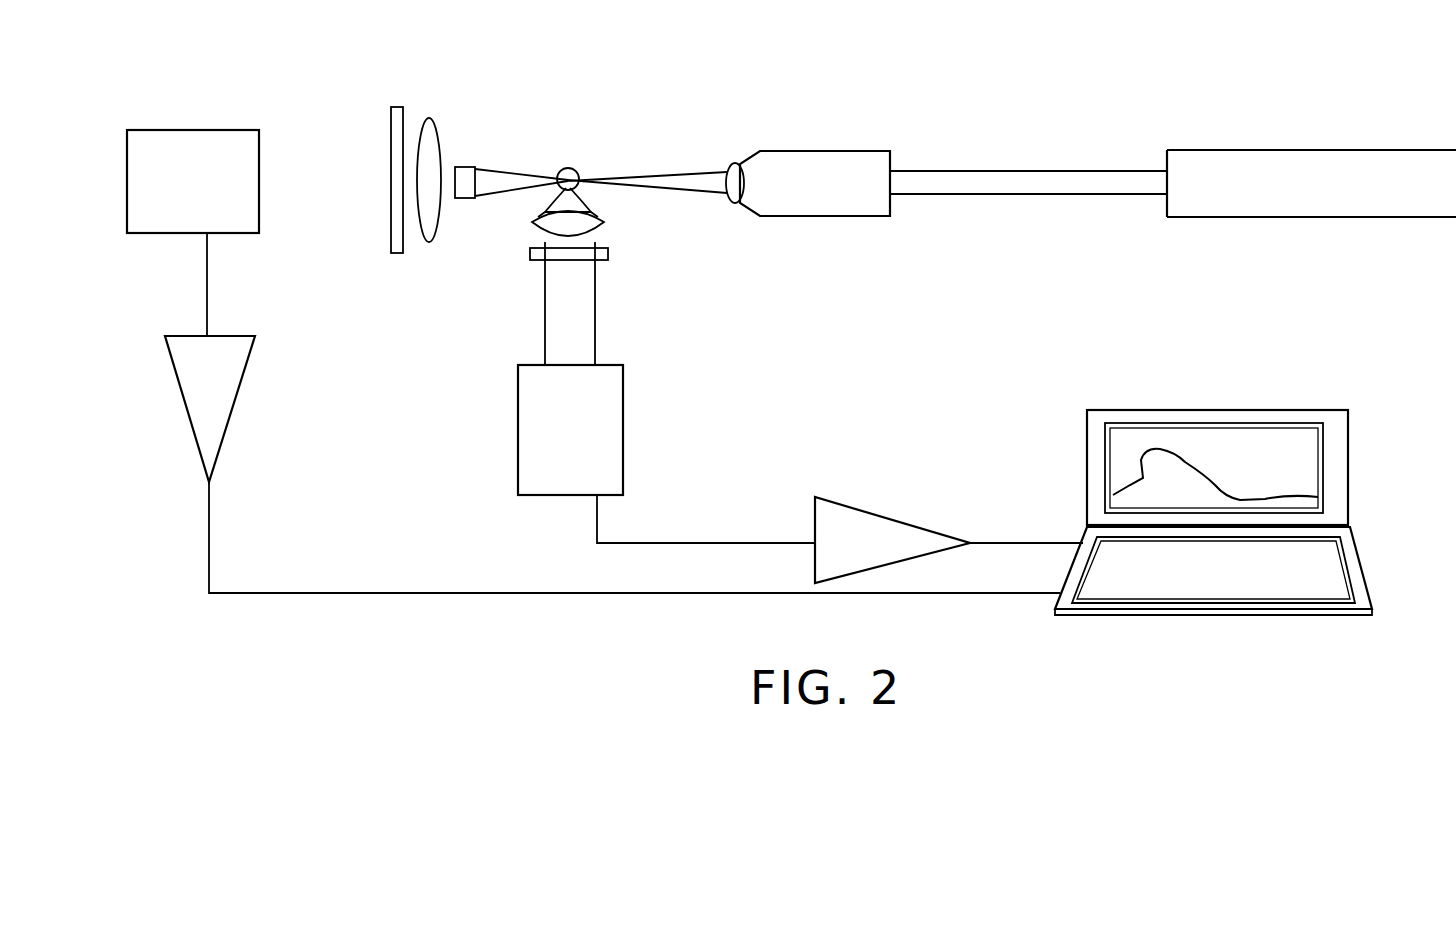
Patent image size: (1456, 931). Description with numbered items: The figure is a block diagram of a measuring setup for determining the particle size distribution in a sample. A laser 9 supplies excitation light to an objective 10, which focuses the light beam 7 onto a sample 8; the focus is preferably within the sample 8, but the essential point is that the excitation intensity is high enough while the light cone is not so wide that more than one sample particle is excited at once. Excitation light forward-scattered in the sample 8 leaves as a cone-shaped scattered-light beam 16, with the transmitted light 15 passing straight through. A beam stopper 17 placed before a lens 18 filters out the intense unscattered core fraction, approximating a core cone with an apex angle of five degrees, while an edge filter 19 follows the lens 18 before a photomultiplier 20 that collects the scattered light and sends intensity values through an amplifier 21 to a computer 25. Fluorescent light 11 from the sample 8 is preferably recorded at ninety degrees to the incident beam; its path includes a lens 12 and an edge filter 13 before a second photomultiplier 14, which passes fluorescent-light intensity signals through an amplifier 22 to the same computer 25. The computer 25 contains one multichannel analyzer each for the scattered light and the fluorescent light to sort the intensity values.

The excitation light beam 7 is at (694, 178).
The sample 8 is at (567, 170).
The laser 9 is at (1304, 158).
The objective 10 is at (838, 168).
The fluorescent light 11 is at (593, 217).
The lens 12 is at (543, 230).
The edge filter 13 is at (610, 257).
The photomultiplier 14 is at (607, 411).
The transmitted light 15 is at (480, 146).
The cone-shaped scattered-light beam 16 is at (503, 180).
The beam stopper 17 is at (460, 165).
The lens 18 is at (425, 240).
The edge filter 19 is at (393, 120).
The photomultiplier 20 is at (170, 143).
The amplifier 21 is at (217, 398).
The amplifier 22 is at (878, 528).
The computer 25 is at (1226, 410).